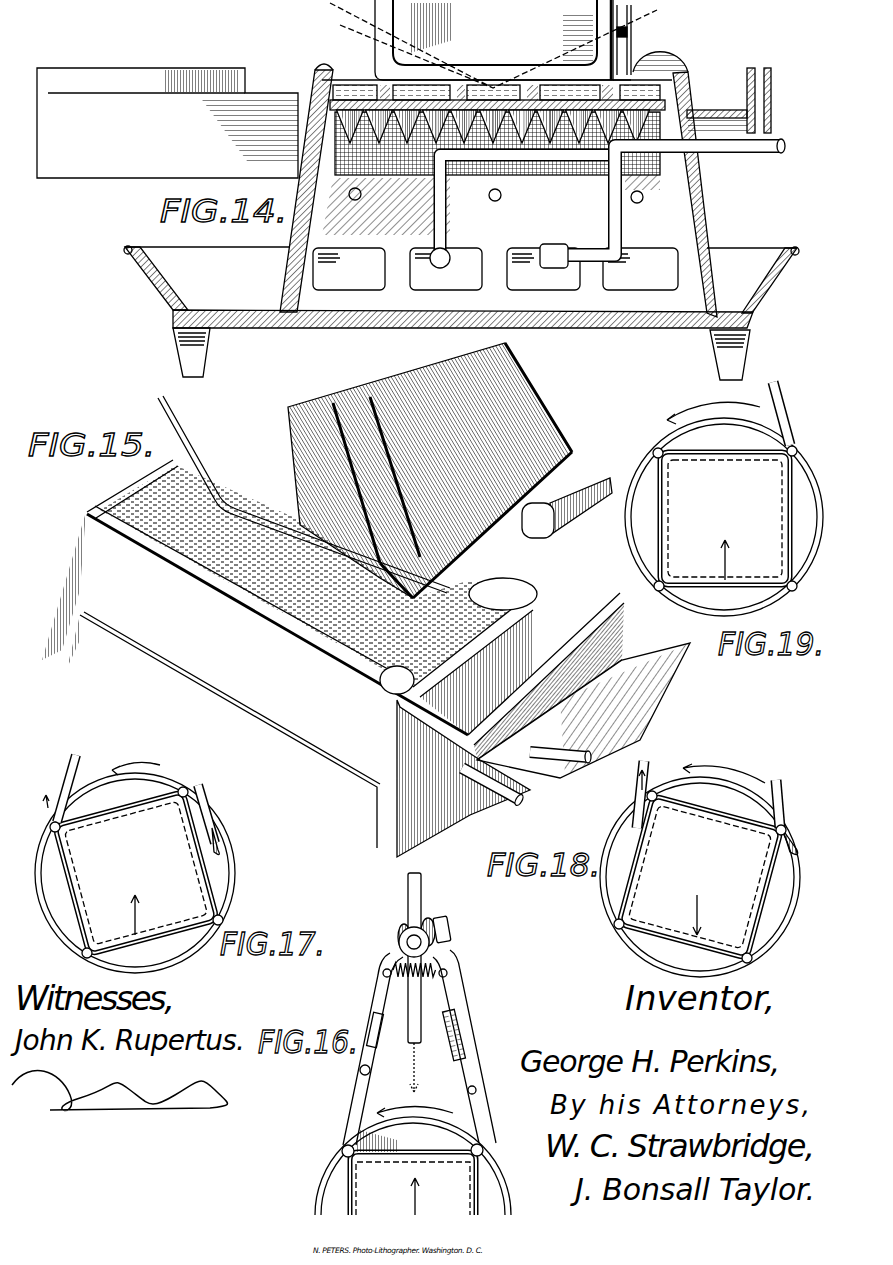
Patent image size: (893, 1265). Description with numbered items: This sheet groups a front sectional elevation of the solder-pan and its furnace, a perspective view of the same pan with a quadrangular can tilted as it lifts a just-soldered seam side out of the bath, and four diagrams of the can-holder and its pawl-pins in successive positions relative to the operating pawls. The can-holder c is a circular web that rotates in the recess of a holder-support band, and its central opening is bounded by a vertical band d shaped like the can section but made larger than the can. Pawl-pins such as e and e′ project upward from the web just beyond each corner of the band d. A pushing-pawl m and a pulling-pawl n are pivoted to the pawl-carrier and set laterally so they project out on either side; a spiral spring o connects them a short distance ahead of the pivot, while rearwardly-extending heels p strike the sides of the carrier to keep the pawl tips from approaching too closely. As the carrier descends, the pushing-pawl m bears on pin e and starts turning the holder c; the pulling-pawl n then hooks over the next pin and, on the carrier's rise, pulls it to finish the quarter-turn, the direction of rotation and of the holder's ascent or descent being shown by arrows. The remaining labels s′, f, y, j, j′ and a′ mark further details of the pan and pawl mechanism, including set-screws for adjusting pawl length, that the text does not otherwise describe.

In FIG. 14, the dashed guide line s′ is at (493, 88).
In FIG. 15, the handle f is at (567, 508).
In FIG. 19, the can-holder c is at (724, 517).
In FIG. 17, the can-holder c is at (140, 873).
In FIG. 18, the can-holder c is at (700, 877).
In FIG. 16, the can-holder c is at (418, 1166).
In FIG. 19, the vertical band d is at (664, 518).
In FIG. 17, the vertical band d is at (78, 881).
In FIG. 18, the vertical band d is at (631, 886).
In FIG. 16, the vertical band d is at (365, 1157).
In FIG. 19, the pawl-pin e is at (662, 590).
In FIG. 17, the pawl-pin e is at (52, 826).
In FIG. 18, the pawl-pin e is at (615, 925).
In FIG. 16, the pawl-pin e is at (343, 1152).
In FIG. 19, the pawl-pin e′ is at (796, 586).
In FIG. 17, the pawl-pin e′ is at (88, 957).
In FIG. 18, the pawl-pin e′ is at (753, 960).
In FIG. 17, the pushing-pawl m is at (70, 777).
In FIG. 18, the pushing-pawl m is at (637, 797).
In FIG. 16, the pushing-pawl m is at (353, 1107).
In FIG. 17, the pulling-pawl n is at (211, 838).
In FIG. 18, the pulling-pawl n is at (795, 841).
In FIG. 16, the pulling-pawl n is at (492, 1117).
In FIG. 19, the arrow / direction of movement y is at (782, 416).
In FIG. 16, the arrow / direction of movement y is at (466, 1103).
In FIG. 16, the rod j is at (422, 900).
In FIG. 16, the rod extension j′ is at (412, 1020).
In FIG. 16, the heels p is at (401, 927).
In FIG. 16, the block a′ is at (450, 929).
In FIG. 16, the spiral spring o is at (415, 981).